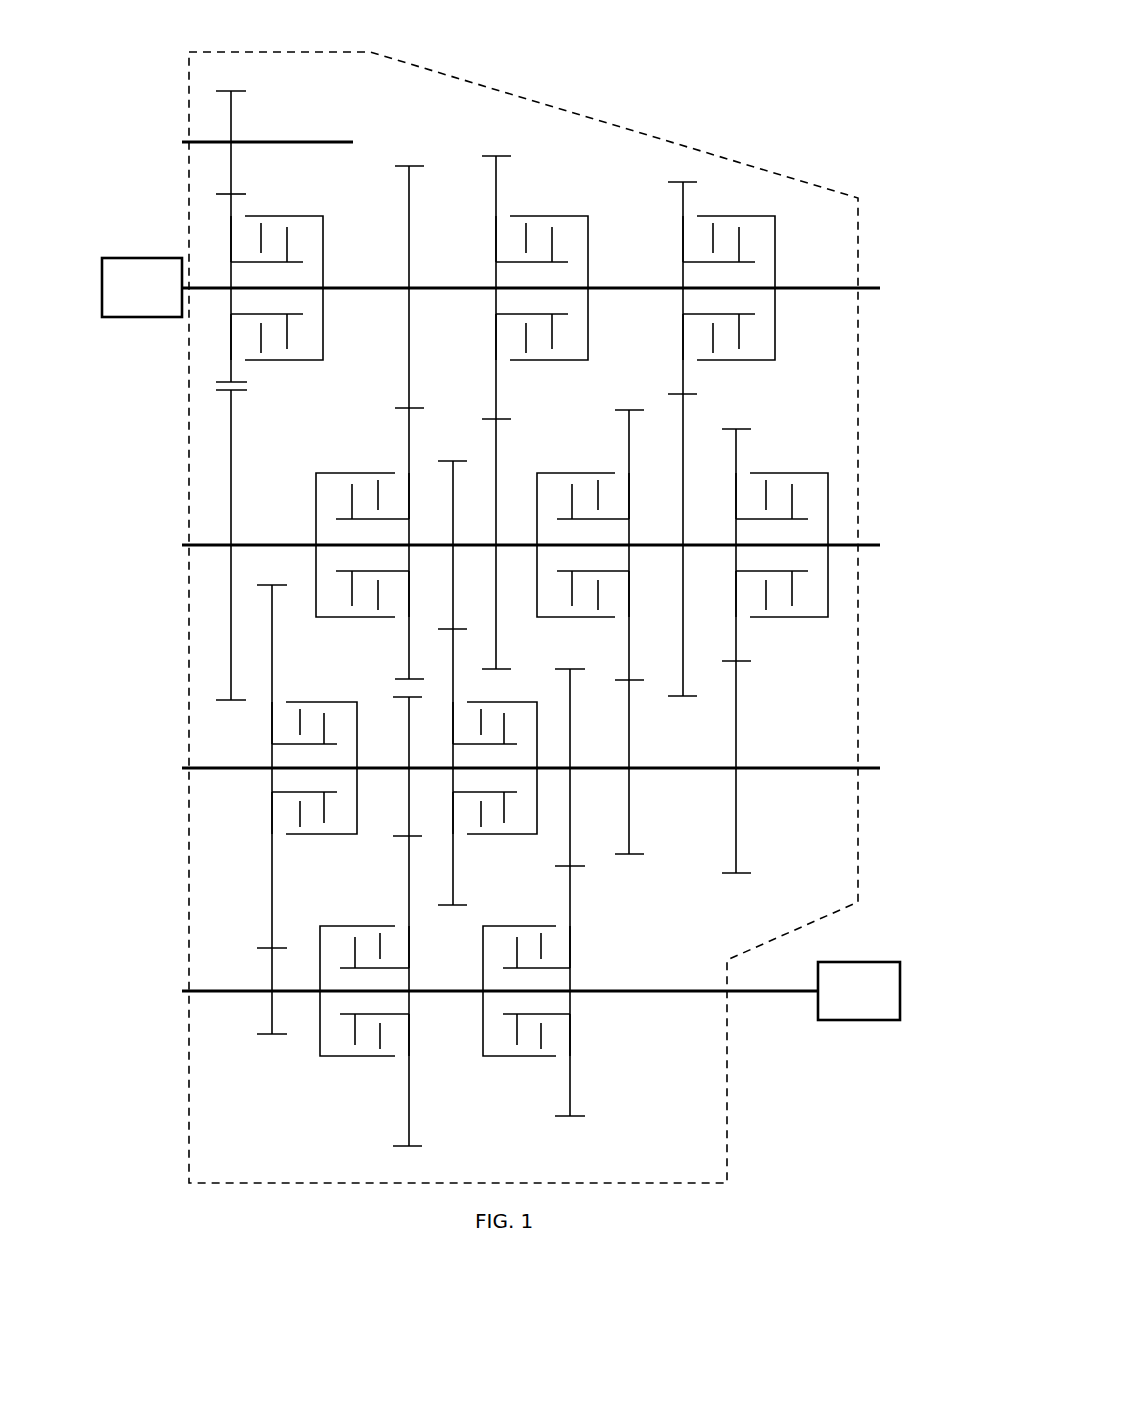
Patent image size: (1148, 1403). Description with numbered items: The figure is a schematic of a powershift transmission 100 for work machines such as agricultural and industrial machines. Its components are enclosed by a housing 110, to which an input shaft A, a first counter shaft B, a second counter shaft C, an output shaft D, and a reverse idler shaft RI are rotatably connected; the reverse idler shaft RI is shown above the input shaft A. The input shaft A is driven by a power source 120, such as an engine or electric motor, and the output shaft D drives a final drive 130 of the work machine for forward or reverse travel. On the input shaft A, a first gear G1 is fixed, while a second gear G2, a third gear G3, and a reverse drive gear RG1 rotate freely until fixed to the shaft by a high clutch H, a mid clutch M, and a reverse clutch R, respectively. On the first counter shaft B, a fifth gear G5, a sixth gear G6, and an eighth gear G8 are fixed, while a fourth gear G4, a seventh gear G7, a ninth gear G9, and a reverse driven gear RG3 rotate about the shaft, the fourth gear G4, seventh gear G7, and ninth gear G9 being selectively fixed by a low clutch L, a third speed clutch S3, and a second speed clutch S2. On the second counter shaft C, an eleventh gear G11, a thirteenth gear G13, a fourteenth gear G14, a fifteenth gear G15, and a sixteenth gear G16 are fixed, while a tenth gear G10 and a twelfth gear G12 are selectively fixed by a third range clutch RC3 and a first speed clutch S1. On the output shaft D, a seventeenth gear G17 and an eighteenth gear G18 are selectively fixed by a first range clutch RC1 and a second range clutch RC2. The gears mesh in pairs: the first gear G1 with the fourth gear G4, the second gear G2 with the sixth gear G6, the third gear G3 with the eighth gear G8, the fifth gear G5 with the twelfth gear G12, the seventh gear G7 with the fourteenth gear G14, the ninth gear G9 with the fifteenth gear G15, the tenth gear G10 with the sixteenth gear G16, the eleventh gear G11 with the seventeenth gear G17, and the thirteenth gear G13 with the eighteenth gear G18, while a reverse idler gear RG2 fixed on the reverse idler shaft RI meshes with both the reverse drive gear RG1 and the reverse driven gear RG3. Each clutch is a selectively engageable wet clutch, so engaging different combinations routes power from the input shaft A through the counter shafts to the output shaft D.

The powershift transmission 100 is at (759, 54).
The housing 110 is at (693, 148).
The power source 120 is at (126, 301).
The final drive 130 is at (843, 1003).
The input shaft A is at (207, 290).
The first counter shaft B is at (197, 546).
The second counter shaft C is at (197, 769).
The output shaft D is at (197, 992).
The reverse idler shaft RI is at (190, 141).
The reverse drive gear RG1 is at (231, 214).
The reverse idler gear RG2 is at (230, 104).
The reverse driven gear RG3 is at (231, 406).
The reverse clutch R is at (319, 216).
The high clutch H is at (572, 217).
The mid clutch M is at (760, 217).
The low clutch L is at (372, 473).
The first speed clutch S1 is at (502, 702).
The second speed clutch S2 is at (815, 473).
The third speed clutch S3 is at (608, 473).
The first range clutch RC1 is at (387, 926).
The second range clutch RC2 is at (548, 926).
The third range clutch RC3 is at (347, 702).
The first gear G1 is at (409, 202).
The second gear G2 is at (496, 194).
The third gear G3 is at (683, 212).
The fourth gear G4 is at (409, 445).
The fifth gear G5 is at (453, 493).
The sixth gear G6 is at (496, 453).
The seventh gear G7 is at (629, 445).
The eighth gear G8 is at (683, 432).
The ninth gear G9 is at (736, 465).
The tenth gear G10 is at (272, 622).
The eleventh gear G11 is at (409, 732).
The twelfth gear G12 is at (453, 668).
The thirteenth gear G13 is at (570, 708).
The fourteenth gear G14 is at (629, 722).
The fifteenth gear G15 is at (736, 710).
The sixteenth gear G16 is at (272, 980).
The seventeenth gear G17 is at (409, 872).
The eighteenth gear G18 is at (570, 900).